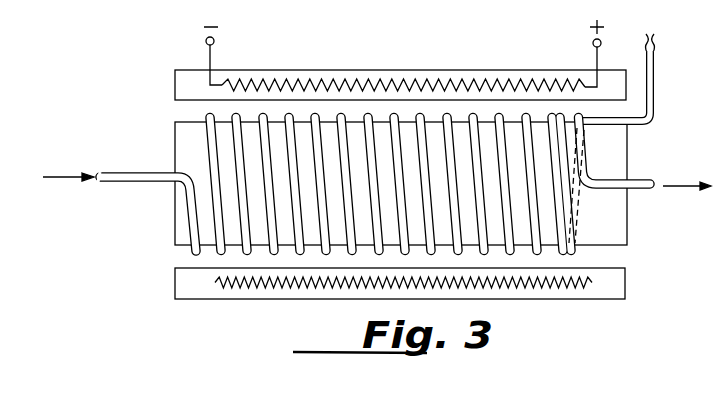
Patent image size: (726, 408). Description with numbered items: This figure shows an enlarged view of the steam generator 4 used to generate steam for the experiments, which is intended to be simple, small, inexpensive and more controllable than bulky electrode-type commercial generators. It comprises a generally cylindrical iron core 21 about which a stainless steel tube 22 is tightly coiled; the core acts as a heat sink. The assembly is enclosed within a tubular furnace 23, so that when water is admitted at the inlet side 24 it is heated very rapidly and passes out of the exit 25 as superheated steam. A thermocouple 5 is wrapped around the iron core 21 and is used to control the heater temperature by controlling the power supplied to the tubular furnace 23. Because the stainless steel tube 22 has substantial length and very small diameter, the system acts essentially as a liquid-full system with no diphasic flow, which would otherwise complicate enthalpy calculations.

The steam generator 4 is at (377, 192).
The thermocouple 5 is at (653, 78).
The iron core 21 is at (175, 145).
The stainless steel tube 22 is at (377, 136).
The tubular furnace 23 is at (320, 74).
The inlet side 24 is at (128, 182).
The exit 25 is at (643, 190).